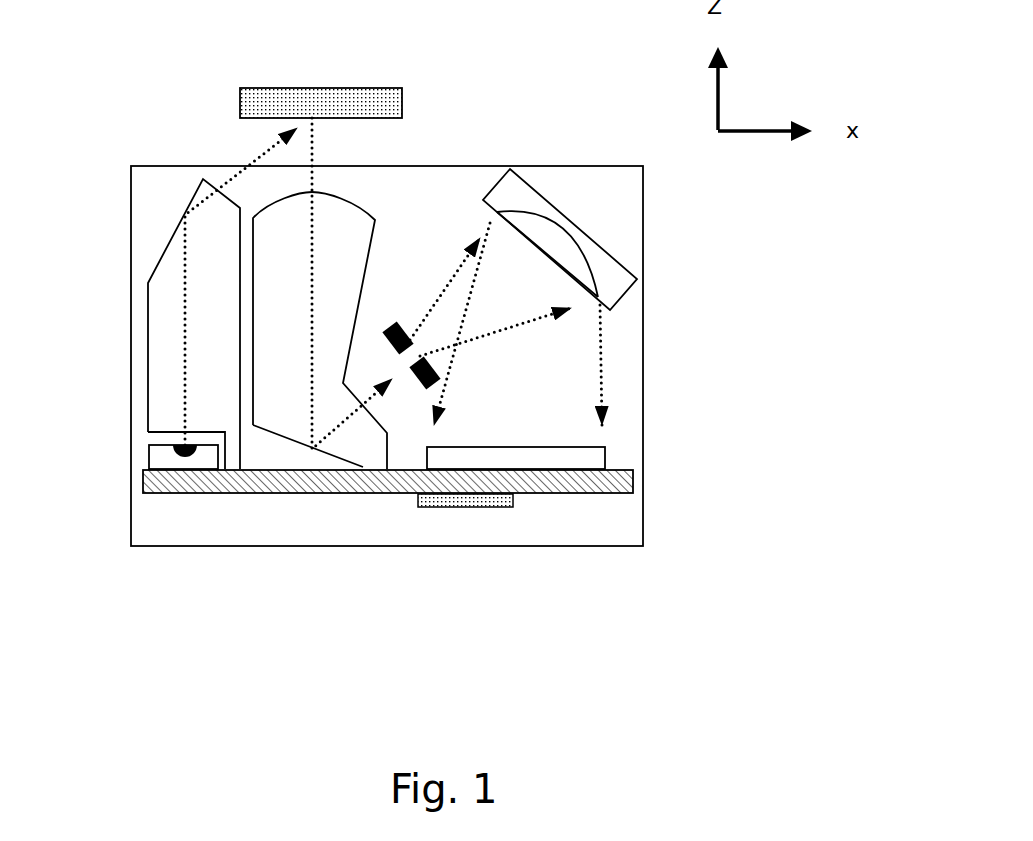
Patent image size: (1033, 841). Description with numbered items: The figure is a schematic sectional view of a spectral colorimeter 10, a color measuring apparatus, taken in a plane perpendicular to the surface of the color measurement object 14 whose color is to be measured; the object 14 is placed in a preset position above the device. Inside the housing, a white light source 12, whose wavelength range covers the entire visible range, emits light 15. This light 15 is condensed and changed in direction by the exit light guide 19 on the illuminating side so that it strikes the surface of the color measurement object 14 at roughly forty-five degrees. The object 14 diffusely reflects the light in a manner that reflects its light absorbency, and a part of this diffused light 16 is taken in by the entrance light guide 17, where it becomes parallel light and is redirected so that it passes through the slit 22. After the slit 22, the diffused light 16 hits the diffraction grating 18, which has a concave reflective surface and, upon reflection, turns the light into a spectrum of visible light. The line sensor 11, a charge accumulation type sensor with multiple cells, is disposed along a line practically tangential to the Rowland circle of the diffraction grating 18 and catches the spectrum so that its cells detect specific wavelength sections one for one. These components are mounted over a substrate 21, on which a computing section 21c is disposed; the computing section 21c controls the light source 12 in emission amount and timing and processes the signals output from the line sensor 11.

The spectral colorimeter 10 is at (627, 193).
The line sensor 11 is at (525, 463).
The white light source 12 is at (158, 462).
The color measurement object 14 is at (402, 102).
The light 15 is at (270, 150).
The diffused light 16 is at (312, 150).
The entrance light guide 17 is at (278, 410).
The diffraction grating 18 is at (637, 283).
The exit light guide 19 is at (167, 317).
The substrate 21 is at (578, 483).
The computing section 21c is at (447, 507).
The slit 22 is at (417, 383).